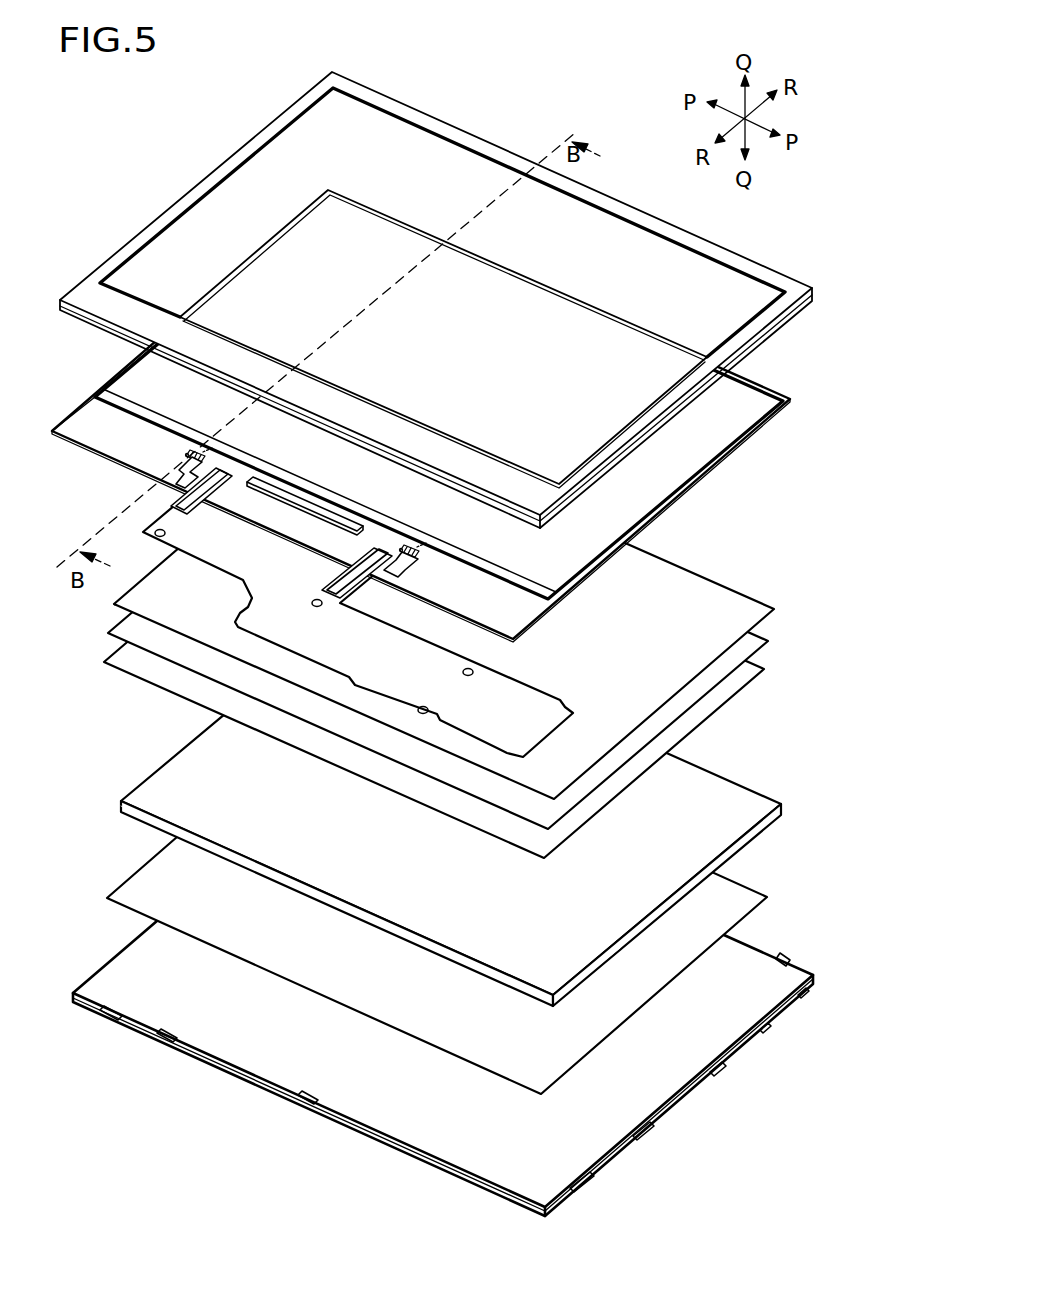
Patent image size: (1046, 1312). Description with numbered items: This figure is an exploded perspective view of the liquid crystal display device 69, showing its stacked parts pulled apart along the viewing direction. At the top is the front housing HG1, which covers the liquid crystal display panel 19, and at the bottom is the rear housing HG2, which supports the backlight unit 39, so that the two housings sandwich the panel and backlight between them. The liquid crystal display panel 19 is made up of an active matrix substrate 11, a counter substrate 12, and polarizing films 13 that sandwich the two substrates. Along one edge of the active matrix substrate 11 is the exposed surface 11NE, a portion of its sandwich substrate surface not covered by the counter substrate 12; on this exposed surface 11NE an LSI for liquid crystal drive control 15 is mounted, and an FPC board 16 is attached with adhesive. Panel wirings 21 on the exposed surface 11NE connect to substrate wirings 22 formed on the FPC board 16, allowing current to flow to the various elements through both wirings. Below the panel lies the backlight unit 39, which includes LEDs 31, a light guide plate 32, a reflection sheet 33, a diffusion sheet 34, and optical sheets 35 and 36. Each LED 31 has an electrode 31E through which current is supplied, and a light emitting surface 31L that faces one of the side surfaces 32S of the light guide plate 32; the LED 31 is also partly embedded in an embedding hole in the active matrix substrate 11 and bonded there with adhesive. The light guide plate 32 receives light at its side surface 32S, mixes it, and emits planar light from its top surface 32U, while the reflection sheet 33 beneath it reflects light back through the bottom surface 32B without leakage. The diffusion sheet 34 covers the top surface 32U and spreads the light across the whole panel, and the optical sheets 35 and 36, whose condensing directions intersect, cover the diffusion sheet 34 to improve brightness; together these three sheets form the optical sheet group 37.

The liquid crystal display device 69 is at (112, 165).
The front housing HG1 is at (60, 299).
The rear housing HG2 is at (72, 995).
The liquid crystal display panel 19 is at (442, 417).
The active matrix substrate 11 is at (54, 429).
The exposed surface 11NE is at (75, 440).
The counter substrate 12 is at (96, 392).
The polarizing film 13 is at (329, 410).
The LSI for liquid crystal drive control 15 is at (310, 512).
The FPC board 16 is at (358, 620).
The panel wirings 21 is at (182, 480).
The substrate wirings 22 is at (200, 508).
The LED 31 is at (309, 517).
The electrode 31E is at (188, 455).
The light emitting surface 31L is at (207, 451).
The light guide plate 32 is at (449, 808).
The side surface 32S is at (121, 801).
The top surface 32U is at (700, 782).
The bottom surface 32B is at (694, 912).
The reflection sheet 33 is at (760, 899).
The diffusion sheet 34 is at (756, 673).
The optical sheet 35 is at (756, 644).
The optical sheet 36 is at (793, 708).
The optical sheet group 37 is at (466, 636).
The backlight unit 39 is at (98, 576).